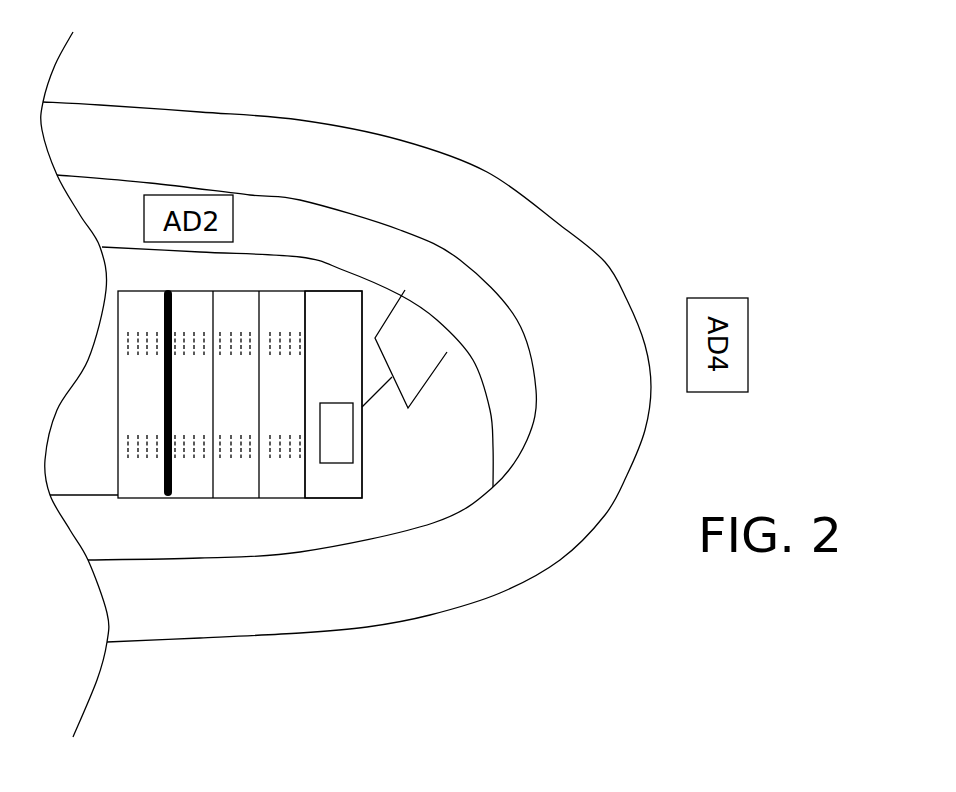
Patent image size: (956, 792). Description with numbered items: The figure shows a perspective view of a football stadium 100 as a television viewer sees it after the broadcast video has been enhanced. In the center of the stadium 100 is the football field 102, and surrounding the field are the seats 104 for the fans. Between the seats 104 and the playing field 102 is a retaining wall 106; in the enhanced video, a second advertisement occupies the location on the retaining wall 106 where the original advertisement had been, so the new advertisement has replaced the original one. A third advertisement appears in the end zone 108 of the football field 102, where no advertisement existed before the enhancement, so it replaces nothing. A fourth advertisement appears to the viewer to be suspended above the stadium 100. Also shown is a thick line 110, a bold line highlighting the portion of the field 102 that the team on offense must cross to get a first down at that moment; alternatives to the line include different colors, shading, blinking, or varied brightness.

The football stadium 100 is at (483, 170).
The football field 102 is at (248, 500).
The seats 104 is at (296, 392).
The retaining wall 106 is at (332, 233).
The end zone 108 is at (340, 482).
The thick line 110 is at (167, 497).